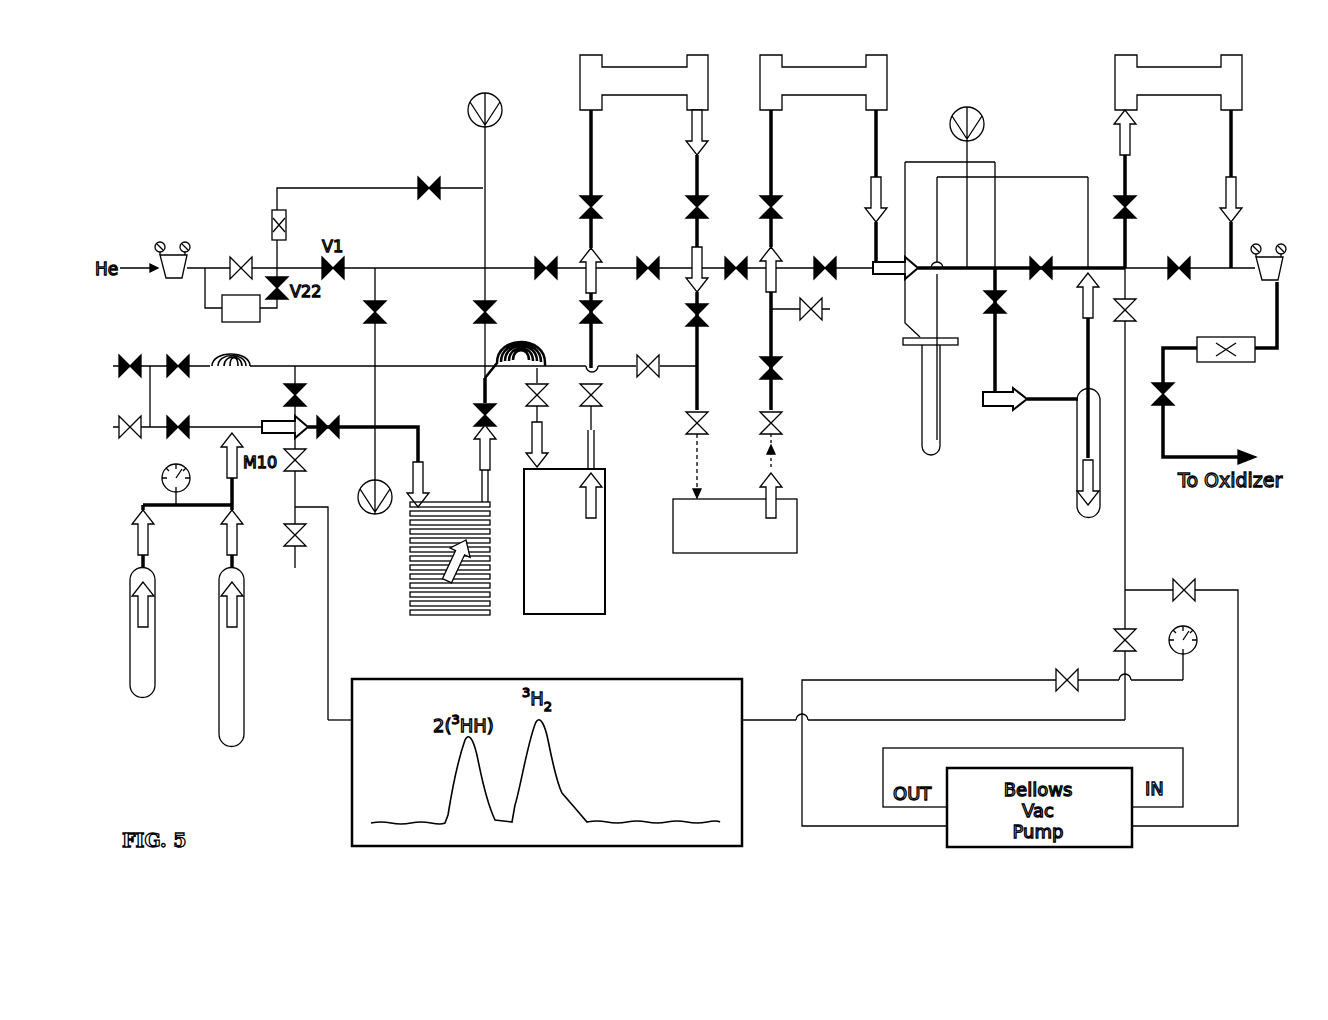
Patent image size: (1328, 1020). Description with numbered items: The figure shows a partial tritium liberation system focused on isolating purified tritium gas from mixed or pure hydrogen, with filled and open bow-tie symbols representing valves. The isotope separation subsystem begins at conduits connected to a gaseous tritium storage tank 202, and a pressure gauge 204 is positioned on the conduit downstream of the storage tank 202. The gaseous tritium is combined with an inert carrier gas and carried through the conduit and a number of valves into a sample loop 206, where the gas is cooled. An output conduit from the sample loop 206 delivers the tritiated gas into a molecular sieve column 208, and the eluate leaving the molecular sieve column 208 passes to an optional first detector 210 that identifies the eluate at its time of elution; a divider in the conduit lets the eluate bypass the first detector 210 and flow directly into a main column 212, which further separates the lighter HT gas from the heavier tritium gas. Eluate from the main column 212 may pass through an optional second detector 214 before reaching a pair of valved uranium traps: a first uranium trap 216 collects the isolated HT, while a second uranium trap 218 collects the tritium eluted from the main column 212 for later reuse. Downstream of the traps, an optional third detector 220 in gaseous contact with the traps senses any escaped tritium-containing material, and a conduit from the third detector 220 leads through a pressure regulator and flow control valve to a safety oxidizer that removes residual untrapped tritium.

The gaseous tritium storage tank 202 is at (238, 685).
The pressure gauge 204 is at (162, 472).
The sample loop 206 is at (410, 592).
The molecular sieve column 208 is at (567, 616).
The first detector 210 is at (637, 95).
The main column 212 is at (760, 555).
The second detector 214 is at (820, 97).
The first uranium trap 216 is at (1088, 518).
The second uranium trap 218 is at (928, 457).
The third detector 220 is at (1173, 97).